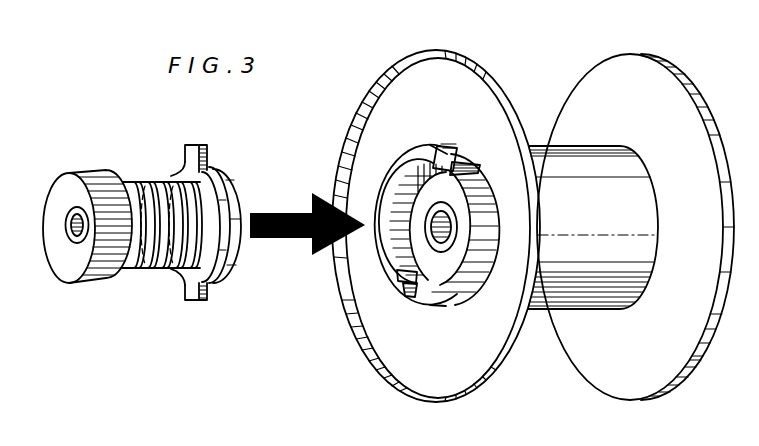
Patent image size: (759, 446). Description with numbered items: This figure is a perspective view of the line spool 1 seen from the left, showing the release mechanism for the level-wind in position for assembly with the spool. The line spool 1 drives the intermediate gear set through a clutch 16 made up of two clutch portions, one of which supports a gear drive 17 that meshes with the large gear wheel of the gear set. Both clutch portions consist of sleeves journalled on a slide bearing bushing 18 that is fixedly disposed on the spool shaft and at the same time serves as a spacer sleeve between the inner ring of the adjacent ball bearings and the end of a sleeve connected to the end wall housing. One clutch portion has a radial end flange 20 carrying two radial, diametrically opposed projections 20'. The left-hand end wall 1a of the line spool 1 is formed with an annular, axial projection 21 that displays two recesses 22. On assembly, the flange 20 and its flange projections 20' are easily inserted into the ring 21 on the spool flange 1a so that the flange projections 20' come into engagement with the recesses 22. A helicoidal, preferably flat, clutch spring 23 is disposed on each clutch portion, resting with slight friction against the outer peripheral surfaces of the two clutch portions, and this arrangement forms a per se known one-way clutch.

The line spool 1 is at (612, 223).
The left-hand end wall 1a is at (436, 73).
The clutch 16 is at (148, 180).
The gear drive 17 is at (97, 284).
The slide bearing bushing 18 is at (77, 210).
The radial end flange 20 is at (214, 213).
The radial projections 20' is at (222, 223).
The annular axial projection 21 is at (436, 158).
The recesses 22 is at (468, 160).
The clutch spring 23 is at (156, 272).